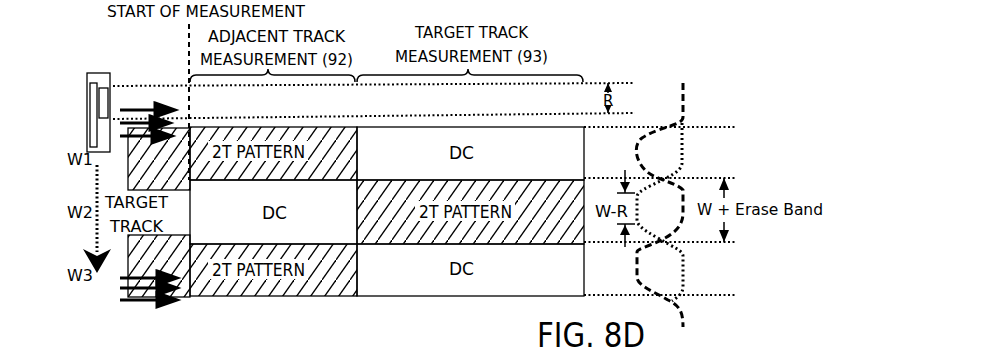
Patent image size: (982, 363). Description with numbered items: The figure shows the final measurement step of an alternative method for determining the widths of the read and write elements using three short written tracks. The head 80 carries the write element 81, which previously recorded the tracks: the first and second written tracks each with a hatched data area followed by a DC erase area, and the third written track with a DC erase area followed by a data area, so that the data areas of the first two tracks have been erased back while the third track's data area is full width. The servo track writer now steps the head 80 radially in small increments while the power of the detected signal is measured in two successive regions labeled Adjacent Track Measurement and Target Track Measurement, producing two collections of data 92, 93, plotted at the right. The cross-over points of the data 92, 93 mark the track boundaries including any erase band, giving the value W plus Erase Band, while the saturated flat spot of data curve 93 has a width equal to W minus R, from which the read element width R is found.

The head 80 is at (105, 75).
The write element 81 is at (92, 76).
The collection of data (adjacent track measurement) 92 is at (685, 103).
The collection of data (target track measurement) 93 is at (683, 152).